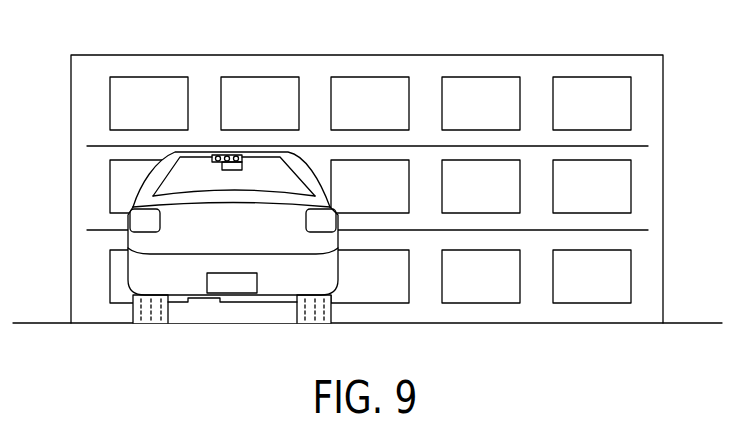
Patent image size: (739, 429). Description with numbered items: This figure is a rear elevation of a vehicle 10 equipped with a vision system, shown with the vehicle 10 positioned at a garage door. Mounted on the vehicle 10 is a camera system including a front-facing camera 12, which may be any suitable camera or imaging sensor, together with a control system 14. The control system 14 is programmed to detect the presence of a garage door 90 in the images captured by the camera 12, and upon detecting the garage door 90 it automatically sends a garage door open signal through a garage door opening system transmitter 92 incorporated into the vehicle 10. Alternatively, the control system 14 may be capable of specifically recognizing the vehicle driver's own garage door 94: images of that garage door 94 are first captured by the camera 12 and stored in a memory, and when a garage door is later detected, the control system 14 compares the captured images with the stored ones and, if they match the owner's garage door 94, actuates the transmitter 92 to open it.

The vehicle 10 is at (165, 152).
The front-facing camera 12 is at (237, 155).
The control system 14 is at (224, 155).
The garage door 90 is at (316, 66).
The garage door opening system transmitter 92 is at (229, 156).
The vehicle driver's garage door 94 is at (482, 66).